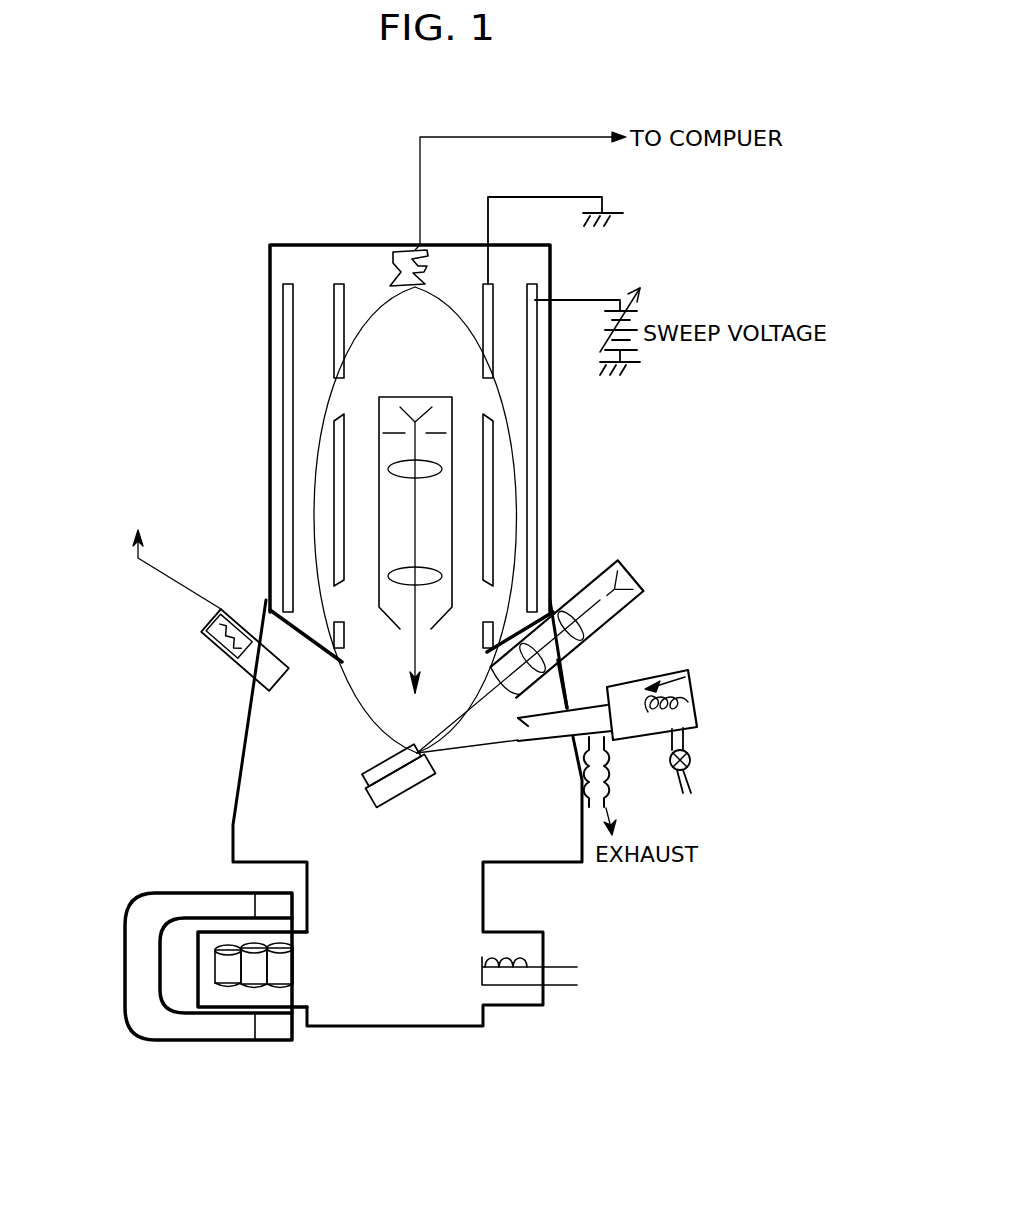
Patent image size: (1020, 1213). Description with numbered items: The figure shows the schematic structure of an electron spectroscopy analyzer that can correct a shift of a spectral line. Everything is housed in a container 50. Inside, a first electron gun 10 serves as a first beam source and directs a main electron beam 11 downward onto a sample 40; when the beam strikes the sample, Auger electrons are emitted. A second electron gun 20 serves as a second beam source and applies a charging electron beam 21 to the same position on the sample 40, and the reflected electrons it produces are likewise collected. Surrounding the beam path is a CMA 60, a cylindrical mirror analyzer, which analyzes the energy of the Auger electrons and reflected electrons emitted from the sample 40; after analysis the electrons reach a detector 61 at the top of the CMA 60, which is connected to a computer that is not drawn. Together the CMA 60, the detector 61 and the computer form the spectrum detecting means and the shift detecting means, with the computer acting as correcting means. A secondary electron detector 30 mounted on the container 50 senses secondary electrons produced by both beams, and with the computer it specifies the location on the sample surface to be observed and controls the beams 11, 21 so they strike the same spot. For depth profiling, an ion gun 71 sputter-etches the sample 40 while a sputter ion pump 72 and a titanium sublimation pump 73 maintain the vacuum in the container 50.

The first electron gun 10 is at (378, 505).
The electron beam 11 is at (413, 640).
The second electron gun 20 is at (623, 613).
The electron beam 21 is at (562, 678).
The secondary electron detector 30 is at (210, 637).
The sample 40 is at (405, 752).
The container 50 is at (245, 843).
The CMA (cylindrical mirror analyzer) 60 is at (540, 463).
The detector 61 is at (400, 260).
The ion gun 71 is at (690, 700).
The sputter ion pump 72 is at (306, 1046).
The titanium sublimation pump 73 is at (552, 967).